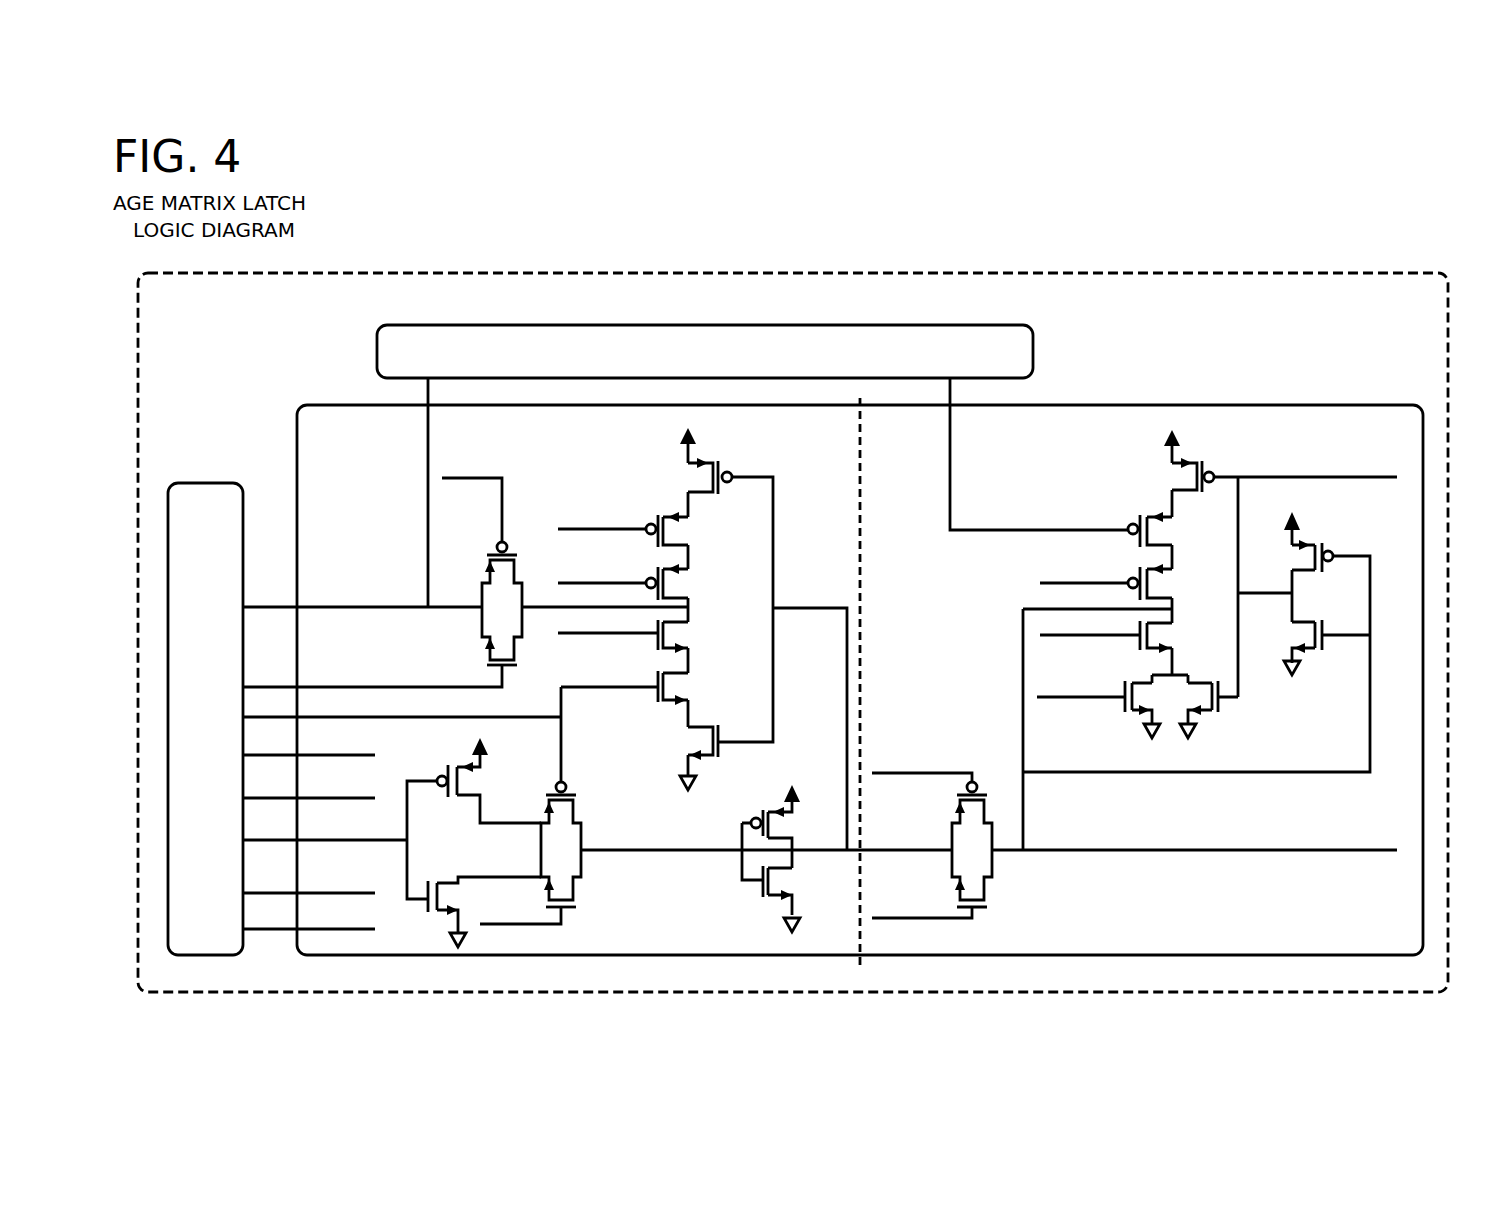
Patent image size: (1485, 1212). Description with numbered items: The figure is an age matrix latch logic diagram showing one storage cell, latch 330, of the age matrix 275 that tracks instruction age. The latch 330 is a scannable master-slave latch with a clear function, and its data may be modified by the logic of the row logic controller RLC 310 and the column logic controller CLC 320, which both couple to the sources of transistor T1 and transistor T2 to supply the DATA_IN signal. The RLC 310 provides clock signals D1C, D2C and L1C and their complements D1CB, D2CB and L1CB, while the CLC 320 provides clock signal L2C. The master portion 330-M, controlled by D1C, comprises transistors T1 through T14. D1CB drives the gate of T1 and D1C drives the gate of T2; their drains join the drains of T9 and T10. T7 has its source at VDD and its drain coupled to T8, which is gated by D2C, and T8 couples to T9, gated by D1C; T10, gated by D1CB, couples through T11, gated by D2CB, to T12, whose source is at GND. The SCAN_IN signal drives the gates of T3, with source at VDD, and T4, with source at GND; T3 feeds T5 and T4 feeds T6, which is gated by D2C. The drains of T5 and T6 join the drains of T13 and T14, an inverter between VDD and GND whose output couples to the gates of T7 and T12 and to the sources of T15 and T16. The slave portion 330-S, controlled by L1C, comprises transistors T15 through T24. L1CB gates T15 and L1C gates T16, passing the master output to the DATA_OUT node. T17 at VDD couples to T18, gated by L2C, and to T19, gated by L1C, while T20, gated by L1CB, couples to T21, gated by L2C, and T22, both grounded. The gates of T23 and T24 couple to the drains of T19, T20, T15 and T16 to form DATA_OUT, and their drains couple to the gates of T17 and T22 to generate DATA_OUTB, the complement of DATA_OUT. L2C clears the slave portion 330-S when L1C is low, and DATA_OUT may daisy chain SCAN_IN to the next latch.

The age matrix 275 is at (217, 272).
The row logic controller (RLC) 310 is at (222, 482).
The column logic controller (CLC) 320 is at (512, 326).
The latch 330 is at (352, 405).
The master portion 330-M is at (679, 684).
The slave portion 330-S is at (1134, 667).
The transistor T1 is at (487, 557).
The transistor T2 is at (514, 654).
The transistor T3 is at (474, 813).
The transistor T4 is at (484, 901).
The transistor T5 is at (567, 830).
The transistor T6 is at (545, 899).
The transistor T7 is at (694, 475).
The transistor T8 is at (635, 526).
The transistor T9 is at (635, 580).
The transistor T10 is at (641, 632).
The transistor T11 is at (642, 688).
The transistor T12 is at (686, 742).
The transistor T13 is at (788, 821).
The transistor T14 is at (803, 901).
The transistor T15 is at (932, 823).
The transistor T16 is at (949, 898).
The transistor T17 is at (1175, 475).
The transistor T18 is at (1169, 529).
The transistor T19 is at (1125, 580).
The transistor T20 is at (1125, 632).
The transistor T21 is at (1098, 702).
The transistor T22 is at (1224, 713).
The transistor T23 is at (1325, 536).
The transistor T24 is at (1327, 646).